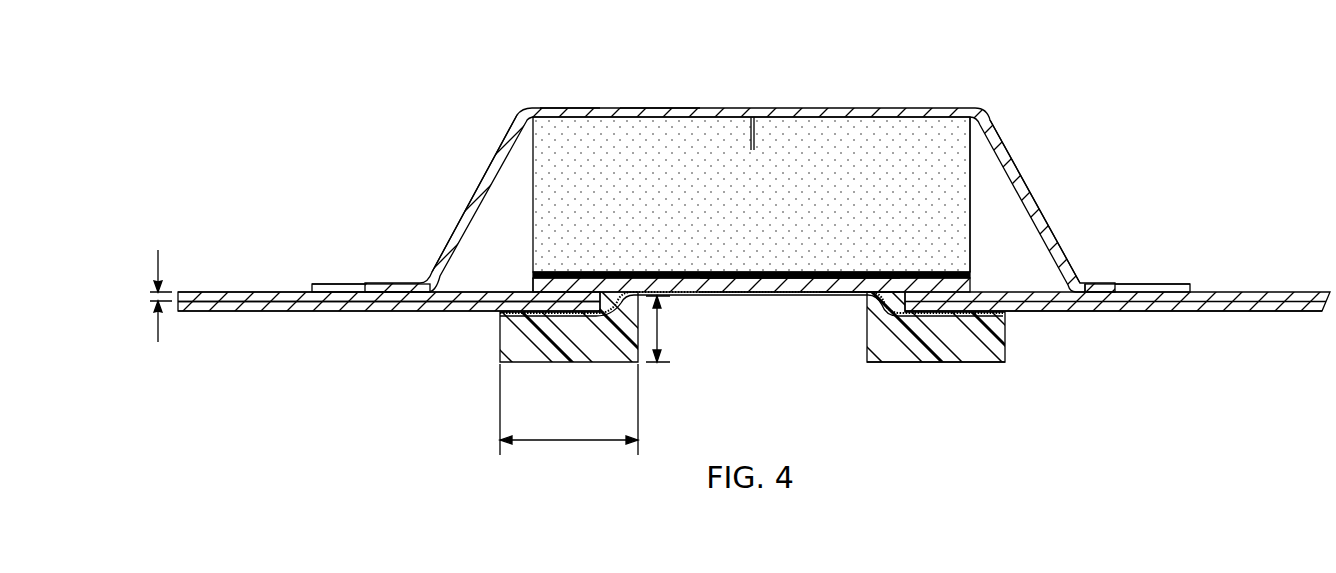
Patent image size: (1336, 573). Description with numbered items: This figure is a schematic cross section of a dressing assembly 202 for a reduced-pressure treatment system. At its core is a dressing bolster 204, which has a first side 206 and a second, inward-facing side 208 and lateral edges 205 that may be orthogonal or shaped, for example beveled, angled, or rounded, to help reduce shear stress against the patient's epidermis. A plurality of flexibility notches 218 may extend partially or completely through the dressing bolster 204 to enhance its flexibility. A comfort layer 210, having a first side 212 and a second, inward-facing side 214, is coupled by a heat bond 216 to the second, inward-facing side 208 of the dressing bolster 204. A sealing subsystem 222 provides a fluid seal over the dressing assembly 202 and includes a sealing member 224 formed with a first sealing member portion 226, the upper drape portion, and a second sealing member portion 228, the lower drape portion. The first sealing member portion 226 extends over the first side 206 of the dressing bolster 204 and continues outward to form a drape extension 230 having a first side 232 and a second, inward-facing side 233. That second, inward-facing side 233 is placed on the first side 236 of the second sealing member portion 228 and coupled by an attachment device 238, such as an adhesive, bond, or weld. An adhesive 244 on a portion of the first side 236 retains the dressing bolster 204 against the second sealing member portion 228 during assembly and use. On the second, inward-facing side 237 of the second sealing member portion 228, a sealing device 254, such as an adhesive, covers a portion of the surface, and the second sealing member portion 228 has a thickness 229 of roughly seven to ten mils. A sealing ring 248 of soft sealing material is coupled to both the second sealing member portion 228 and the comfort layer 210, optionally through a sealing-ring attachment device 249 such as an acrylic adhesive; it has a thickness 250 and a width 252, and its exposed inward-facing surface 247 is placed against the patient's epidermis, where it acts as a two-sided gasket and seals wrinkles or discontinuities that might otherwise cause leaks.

The dressing assembly 202 is at (939, 103).
The dressing bolster 204 is at (733, 204).
The lateral edges 205 is at (972, 203).
The first side 206 is at (655, 107).
The second, inward-facing side 208 is at (626, 271).
The comfort layer 210 is at (778, 293).
The first side 212 is at (857, 293).
The second, inward-facing side 214 is at (818, 293).
The heat bond 216 is at (975, 280).
The flexibility notches 218 is at (757, 121).
The sealing subsystem 222 is at (1003, 140).
The sealing member 224 is at (482, 175).
The first sealing member portion 226 is at (566, 107).
The second sealing member portion 228 is at (262, 292).
The thickness 229 is at (158, 330).
The drape extension 230 is at (318, 283).
The first side 232 is at (1187, 288).
The second, inward-facing side 233 is at (1163, 283).
The first side 236 is at (305, 292).
The second, inward-facing side 237 is at (232, 312).
The attachment device 238 is at (360, 284).
The adhesive 244 is at (532, 290).
The inward-facing surface 247 is at (990, 364).
The sealing ring 248 is at (548, 364).
The sealing-ring attachment device 249 is at (502, 316).
The thickness 250 is at (660, 326).
The width 252 is at (588, 446).
The sealing device 254 is at (315, 312).